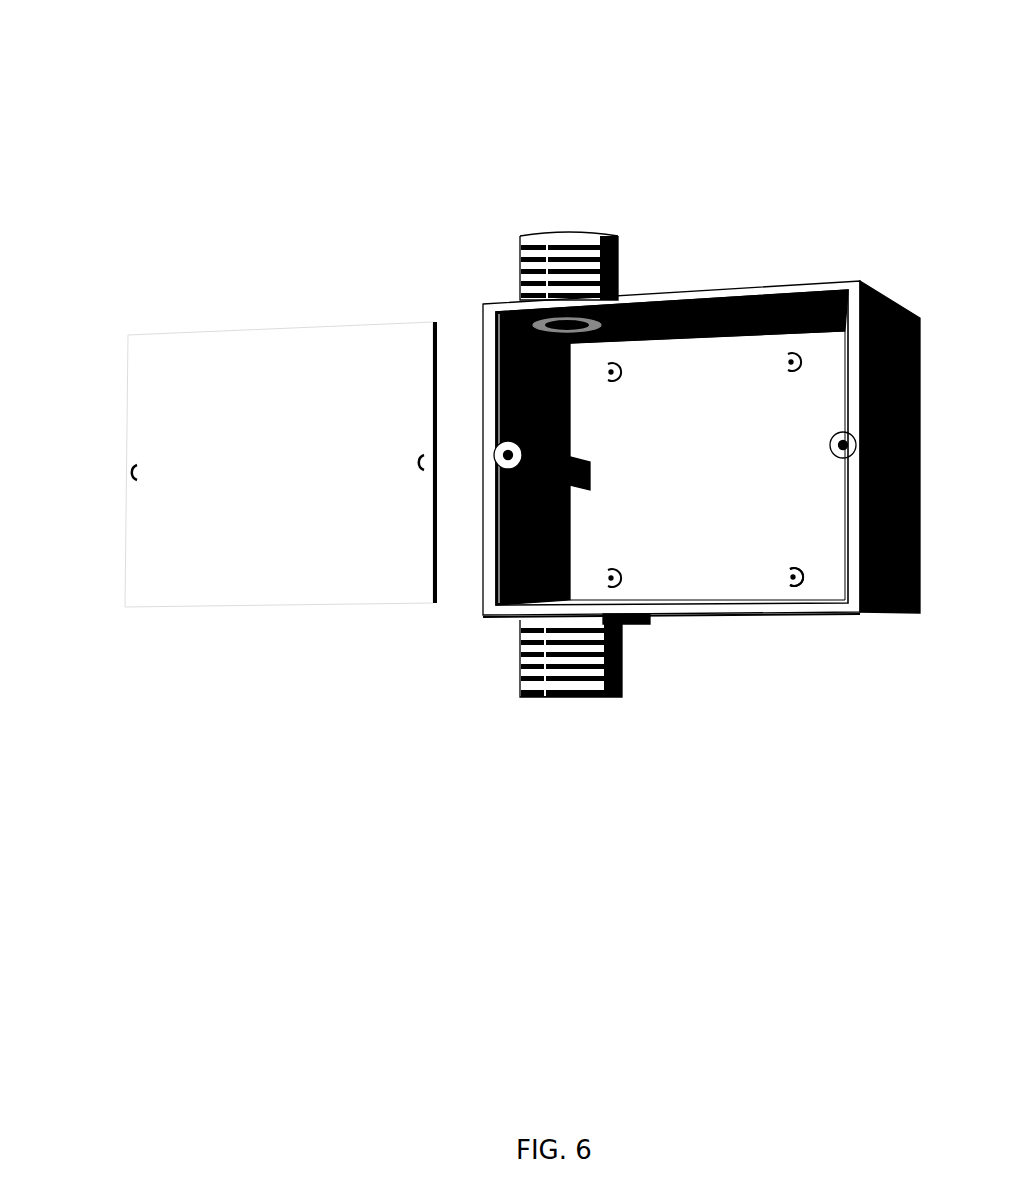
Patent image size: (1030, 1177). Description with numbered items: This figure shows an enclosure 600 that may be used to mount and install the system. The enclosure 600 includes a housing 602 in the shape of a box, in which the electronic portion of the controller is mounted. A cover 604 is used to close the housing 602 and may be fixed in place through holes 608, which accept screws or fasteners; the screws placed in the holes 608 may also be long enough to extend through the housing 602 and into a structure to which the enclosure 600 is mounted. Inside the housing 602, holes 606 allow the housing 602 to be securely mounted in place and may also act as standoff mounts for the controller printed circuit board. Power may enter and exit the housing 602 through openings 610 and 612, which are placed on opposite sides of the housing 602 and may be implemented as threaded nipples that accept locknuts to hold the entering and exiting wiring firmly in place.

The enclosure 600 is at (104, 24).
The housing 602 is at (748, 283).
The cover 604 is at (182, 340).
The holes 606 is at (780, 592).
The holes 608 is at (123, 472).
The opening 610 is at (517, 238).
The opening 612 is at (520, 700).